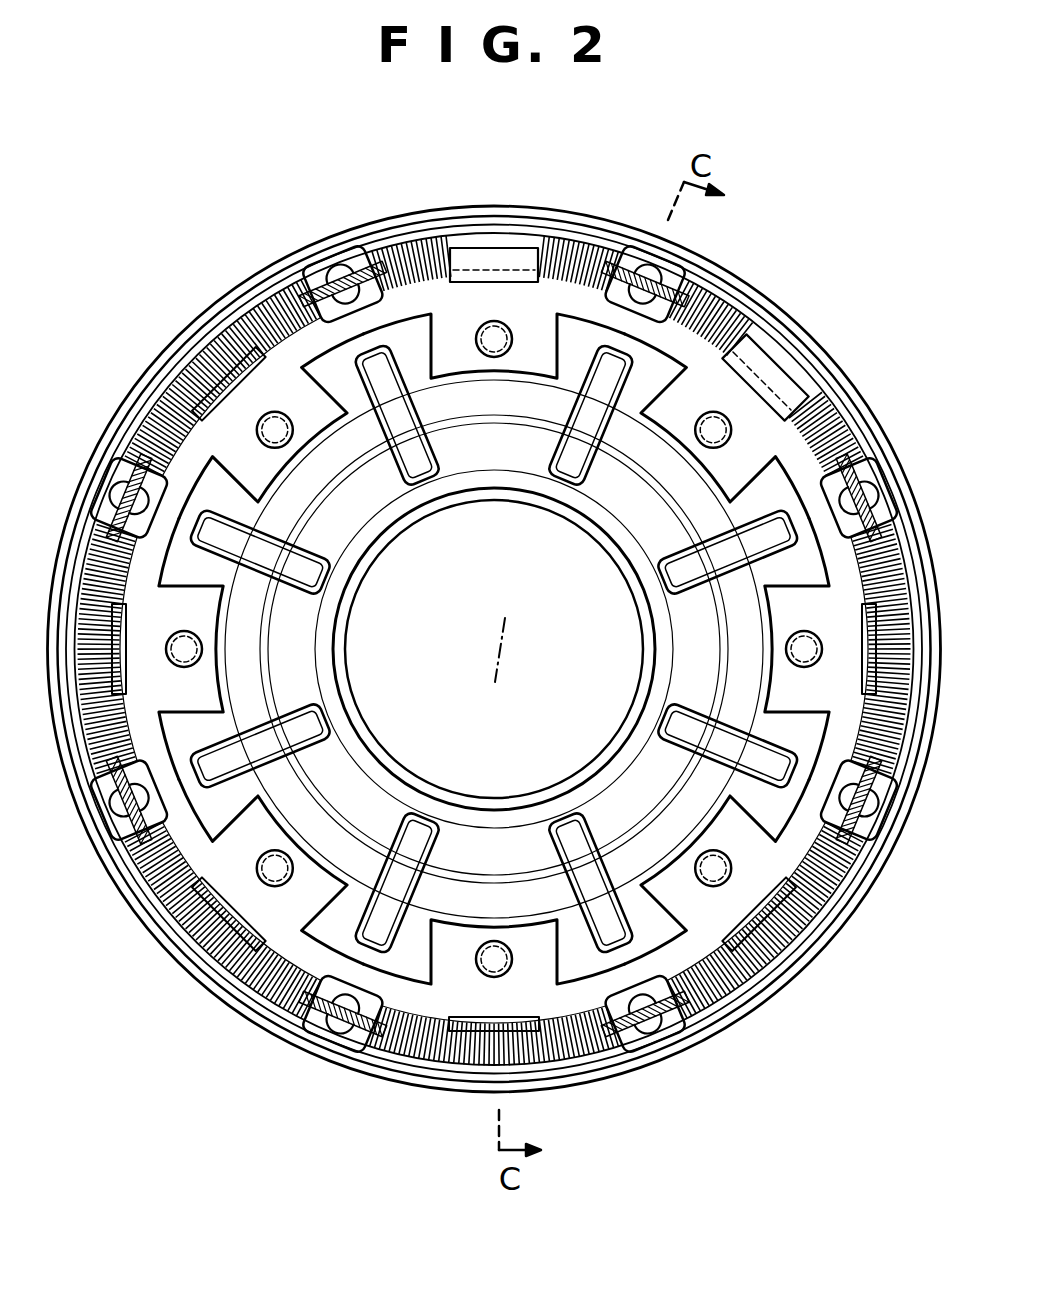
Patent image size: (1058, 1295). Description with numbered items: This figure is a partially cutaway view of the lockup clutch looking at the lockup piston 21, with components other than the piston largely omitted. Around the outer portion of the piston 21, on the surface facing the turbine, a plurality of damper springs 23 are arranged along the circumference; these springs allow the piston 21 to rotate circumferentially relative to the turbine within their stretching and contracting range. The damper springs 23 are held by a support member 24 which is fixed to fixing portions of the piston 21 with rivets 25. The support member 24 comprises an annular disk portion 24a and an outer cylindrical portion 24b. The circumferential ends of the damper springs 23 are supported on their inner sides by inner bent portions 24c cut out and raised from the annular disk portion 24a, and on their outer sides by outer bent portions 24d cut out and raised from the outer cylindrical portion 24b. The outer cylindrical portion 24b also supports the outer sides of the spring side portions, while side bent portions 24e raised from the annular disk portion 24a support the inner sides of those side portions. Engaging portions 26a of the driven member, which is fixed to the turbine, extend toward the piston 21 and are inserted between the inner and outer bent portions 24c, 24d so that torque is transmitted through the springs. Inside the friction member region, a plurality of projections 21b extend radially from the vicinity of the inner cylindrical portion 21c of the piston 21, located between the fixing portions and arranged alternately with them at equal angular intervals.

The lockup piston 21 is at (489, 205).
The projections 21b is at (322, 582).
The inner cylindrical portion 21c is at (455, 793).
The damper springs 23 is at (541, 245).
The support member 24 is at (805, 330).
The annular disk portion 24a is at (655, 534).
The outer cylindrical portion 24b is at (401, 240).
The inner bent portions 24c is at (378, 302).
The outer bent portions 24d is at (305, 268).
The side bent portions 24e is at (466, 262).
The rivets 25 is at (283, 441).
The engaging portions 26a is at (310, 266).